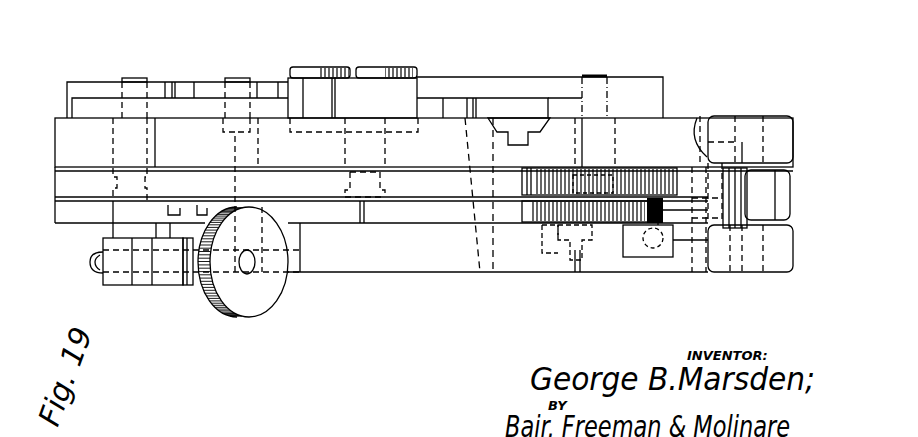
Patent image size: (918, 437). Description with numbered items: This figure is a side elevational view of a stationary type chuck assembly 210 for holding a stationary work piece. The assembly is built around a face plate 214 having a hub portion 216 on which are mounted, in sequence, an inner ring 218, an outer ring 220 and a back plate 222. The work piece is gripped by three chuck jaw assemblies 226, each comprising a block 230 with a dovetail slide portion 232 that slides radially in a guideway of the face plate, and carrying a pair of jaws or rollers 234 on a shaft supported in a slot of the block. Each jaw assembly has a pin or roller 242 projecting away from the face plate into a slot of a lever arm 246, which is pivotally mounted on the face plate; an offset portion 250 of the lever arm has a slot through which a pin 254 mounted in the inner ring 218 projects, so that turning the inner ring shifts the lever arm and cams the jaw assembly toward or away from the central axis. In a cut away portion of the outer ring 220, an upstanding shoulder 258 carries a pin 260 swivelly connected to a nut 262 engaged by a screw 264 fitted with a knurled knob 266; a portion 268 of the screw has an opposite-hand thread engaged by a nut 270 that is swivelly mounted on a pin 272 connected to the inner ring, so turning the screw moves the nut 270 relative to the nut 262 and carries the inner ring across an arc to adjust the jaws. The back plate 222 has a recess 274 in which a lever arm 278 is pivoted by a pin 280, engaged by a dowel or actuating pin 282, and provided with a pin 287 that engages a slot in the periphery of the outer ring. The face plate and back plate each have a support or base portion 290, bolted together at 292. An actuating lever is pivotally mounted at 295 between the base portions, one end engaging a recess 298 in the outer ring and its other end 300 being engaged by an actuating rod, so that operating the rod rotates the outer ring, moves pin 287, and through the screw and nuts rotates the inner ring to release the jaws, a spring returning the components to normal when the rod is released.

The chuck assembly 210 is at (177, 75).
The face plate 214 is at (667, 123).
The hub portion 216 is at (258, 185).
The inner ring 218 is at (55, 190).
The outer ring 220 is at (425, 213).
The back plate 222 is at (312, 270).
The chuck jaw assemblies 226 is at (467, 97).
The block 230 is at (443, 107).
The dovetail slide portion 232 is at (521, 127).
The jaws or rollers 234 is at (300, 108).
The pin or roller 242 is at (234, 76).
The lever arm 246 is at (208, 80).
The offset portion 250 is at (562, 107).
The pin 254 is at (137, 78).
The upstanding shoulder 258 is at (157, 202).
The pin 260 is at (190, 280).
The nut 262 is at (173, 284).
The screw 264 is at (200, 292).
The knurled knob 266 is at (258, 302).
The portion of the screw 268 is at (95, 268).
The nut 270 is at (117, 285).
The pin 272 is at (117, 232).
The recess 274 is at (549, 244).
The lever arm 278 is at (597, 243).
The pin 280 is at (575, 274).
The dowel or actuating pin 282 is at (642, 247).
The pin 287 is at (682, 212).
The support or base portion 290 is at (777, 127).
The bolt 292 is at (747, 205).
The pivot 295 is at (697, 118).
The recess 298 is at (698, 228).
The other end of the lever arm 300 is at (785, 205).